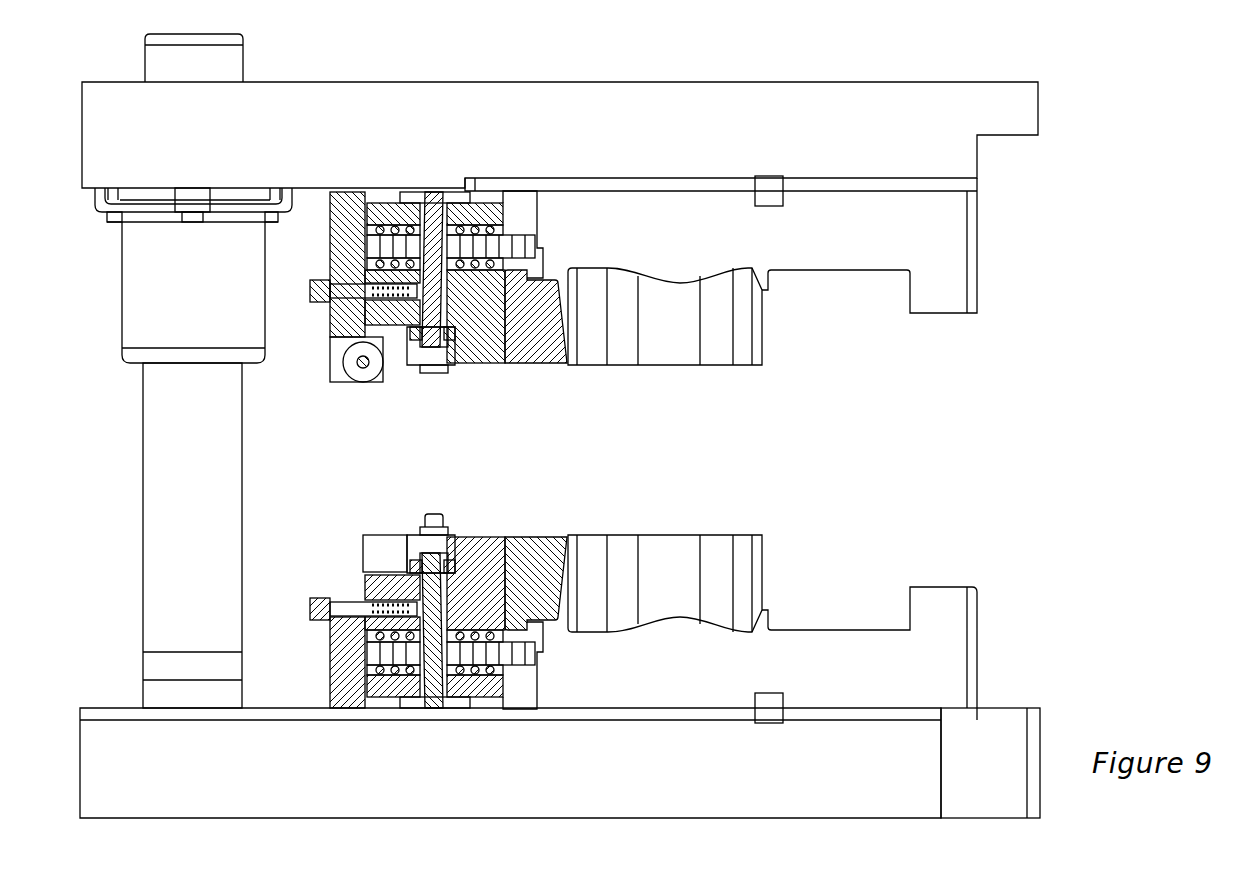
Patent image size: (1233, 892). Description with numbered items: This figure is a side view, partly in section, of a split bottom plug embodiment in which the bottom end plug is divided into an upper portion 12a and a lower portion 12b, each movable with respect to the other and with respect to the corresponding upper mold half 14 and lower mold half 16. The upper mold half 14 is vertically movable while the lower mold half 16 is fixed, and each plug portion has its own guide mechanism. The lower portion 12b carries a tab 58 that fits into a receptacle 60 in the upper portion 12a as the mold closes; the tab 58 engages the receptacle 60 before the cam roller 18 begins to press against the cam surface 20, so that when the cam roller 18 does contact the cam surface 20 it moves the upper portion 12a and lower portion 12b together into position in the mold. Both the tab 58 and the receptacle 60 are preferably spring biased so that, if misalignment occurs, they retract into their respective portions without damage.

The upper portion 12a is at (540, 353).
The lower portion 12b is at (538, 540).
The upper mold half 14 is at (664, 353).
The lower mold half 16 is at (660, 545).
The cam roller 18 is at (363, 382).
The cam surface 20 is at (380, 533).
The tab 58 is at (434, 516).
The receptacle 60 is at (435, 374).